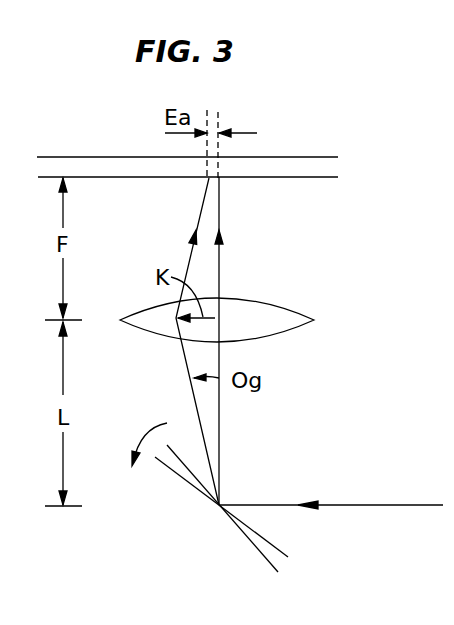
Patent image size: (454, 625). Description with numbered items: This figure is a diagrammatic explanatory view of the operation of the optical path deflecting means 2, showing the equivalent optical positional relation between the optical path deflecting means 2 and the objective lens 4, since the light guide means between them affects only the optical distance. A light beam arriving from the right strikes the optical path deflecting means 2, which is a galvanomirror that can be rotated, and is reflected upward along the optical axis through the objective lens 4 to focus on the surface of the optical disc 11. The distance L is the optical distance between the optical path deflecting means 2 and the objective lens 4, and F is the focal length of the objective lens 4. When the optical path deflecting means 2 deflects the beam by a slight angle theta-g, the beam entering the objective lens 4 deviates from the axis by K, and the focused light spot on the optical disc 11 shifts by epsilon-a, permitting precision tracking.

The optical disc 11 is at (337, 167).
The objective lens 4 is at (314, 317).
The optical path deflecting means 2 is at (250, 540).